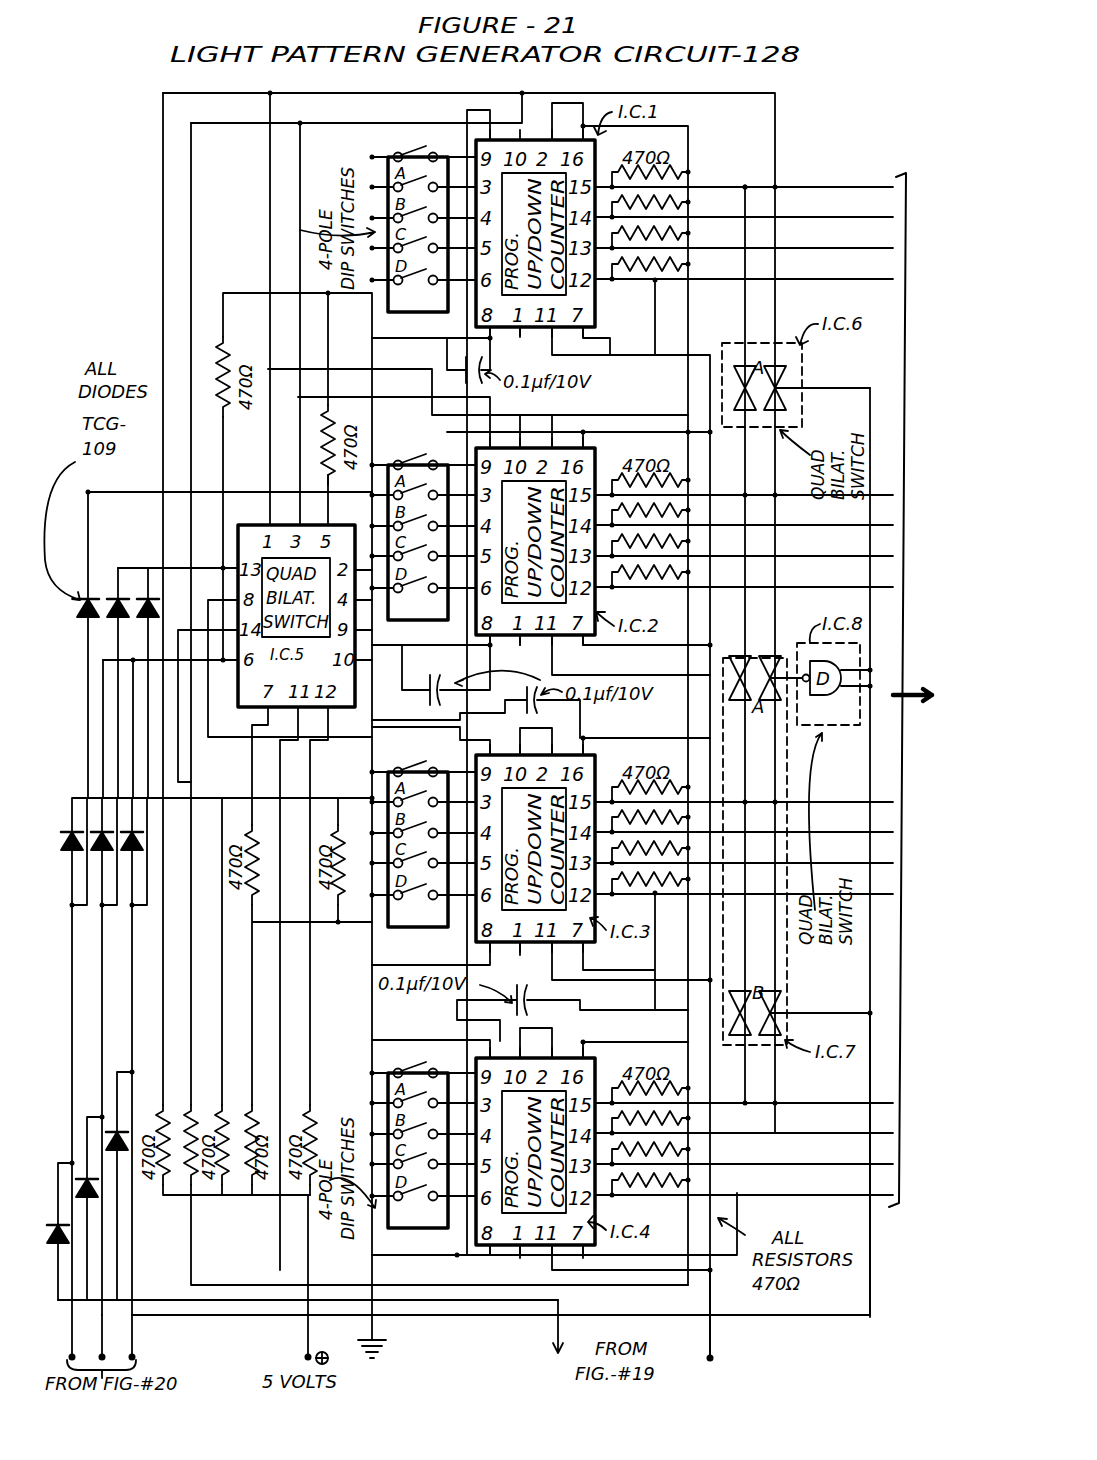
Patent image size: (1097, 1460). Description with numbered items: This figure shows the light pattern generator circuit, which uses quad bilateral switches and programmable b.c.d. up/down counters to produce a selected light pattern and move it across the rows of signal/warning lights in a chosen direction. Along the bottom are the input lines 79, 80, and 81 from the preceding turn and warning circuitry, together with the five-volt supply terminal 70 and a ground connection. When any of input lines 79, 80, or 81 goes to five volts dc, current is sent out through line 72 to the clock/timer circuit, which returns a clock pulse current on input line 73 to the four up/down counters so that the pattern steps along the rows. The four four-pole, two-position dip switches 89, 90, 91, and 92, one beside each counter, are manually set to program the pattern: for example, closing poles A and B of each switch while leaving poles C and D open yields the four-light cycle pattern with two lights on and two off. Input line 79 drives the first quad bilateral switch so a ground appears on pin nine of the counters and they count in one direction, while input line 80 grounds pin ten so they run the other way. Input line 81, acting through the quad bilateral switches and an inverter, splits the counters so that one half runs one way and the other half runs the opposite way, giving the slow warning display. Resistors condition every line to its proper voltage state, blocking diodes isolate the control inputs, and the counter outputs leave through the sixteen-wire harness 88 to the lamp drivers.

The 5 volt supply terminal 70 is at (306, 1350).
The line 72 is at (570, 1339).
The input line 73 is at (696, 1339).
The input line 79 is at (70, 1333).
The input line 80 is at (118, 1330).
The input line 81 is at (134, 1345).
The 16-wire harness to lamp drivers 88 is at (919, 690).
The 4-pole, two-position dip switch 89 is at (428, 157).
The 4-pole, two-position dip switch 90 is at (410, 465).
The 4-pole, two-position dip switch 91 is at (405, 772).
The 4-pole, two-position dip switch 92 is at (403, 1073).